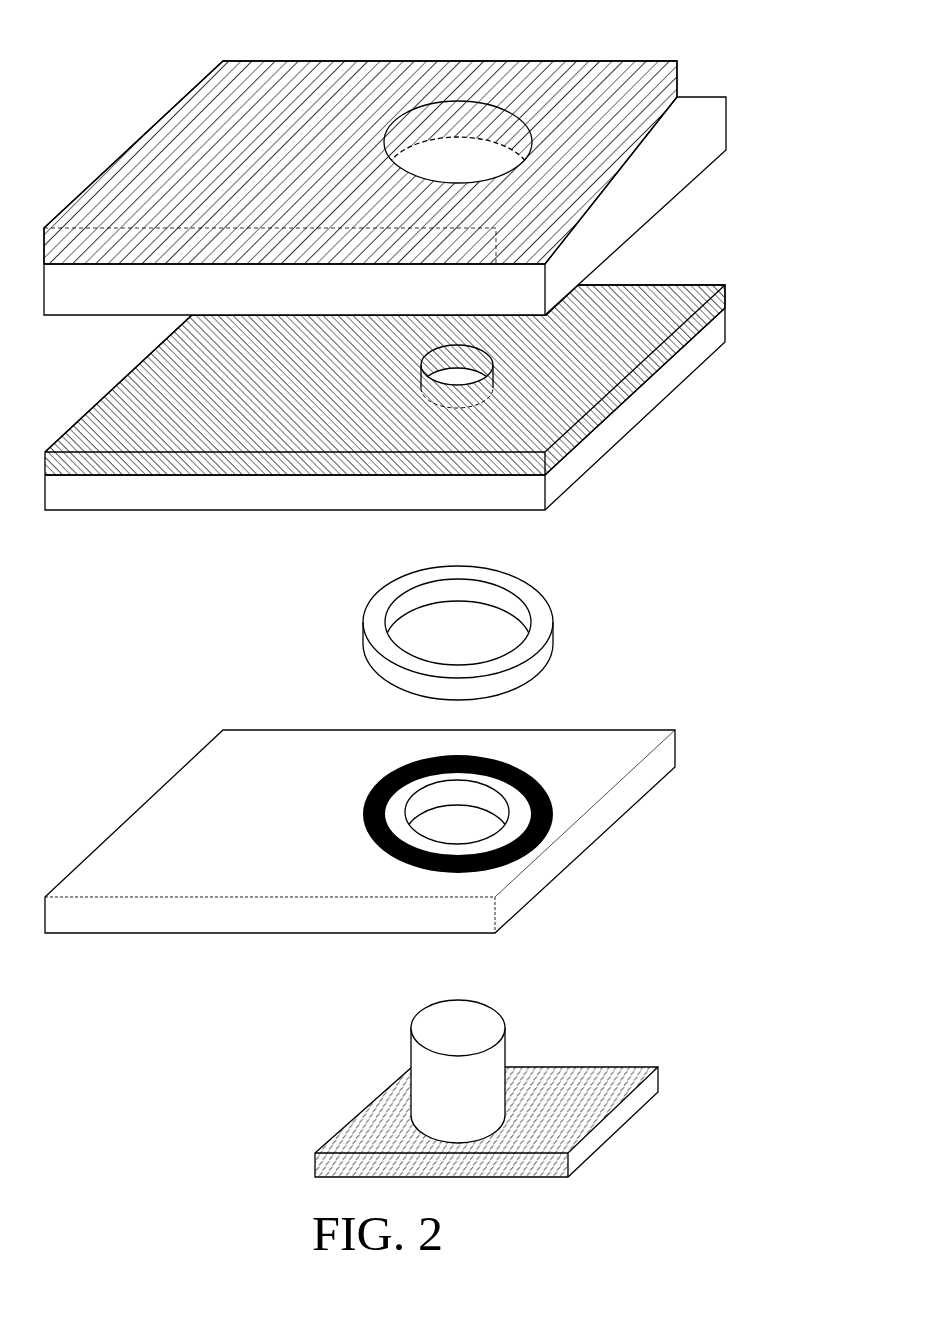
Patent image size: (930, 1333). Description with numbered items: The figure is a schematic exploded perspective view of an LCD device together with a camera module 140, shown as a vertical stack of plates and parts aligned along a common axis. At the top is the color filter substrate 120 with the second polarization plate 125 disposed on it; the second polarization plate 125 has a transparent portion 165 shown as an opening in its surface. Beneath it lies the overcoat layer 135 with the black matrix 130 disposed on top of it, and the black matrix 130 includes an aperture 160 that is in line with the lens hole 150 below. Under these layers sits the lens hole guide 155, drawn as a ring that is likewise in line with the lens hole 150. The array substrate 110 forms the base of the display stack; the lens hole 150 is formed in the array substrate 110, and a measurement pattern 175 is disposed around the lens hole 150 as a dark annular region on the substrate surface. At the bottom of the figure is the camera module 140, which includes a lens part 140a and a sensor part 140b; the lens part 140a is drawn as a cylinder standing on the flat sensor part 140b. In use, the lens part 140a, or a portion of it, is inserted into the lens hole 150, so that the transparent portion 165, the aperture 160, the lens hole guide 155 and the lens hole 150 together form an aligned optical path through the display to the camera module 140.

The array substrate 110 is at (663, 753).
The color filter substrate 120 is at (713, 134).
The second polarization plate 125 is at (667, 85).
The black matrix 130 is at (727, 292).
The overcoat layer 135 is at (716, 338).
The camera module 140 is at (557, 1088).
The lens part 140a is at (483, 1028).
The sensor part 140b is at (652, 1083).
The lens hole 150 is at (453, 823).
The lens hole guide 155 is at (517, 585).
The aperture 160 is at (459, 381).
The transparent portion 165 is at (472, 137).
The measurement pattern 175 is at (508, 764).